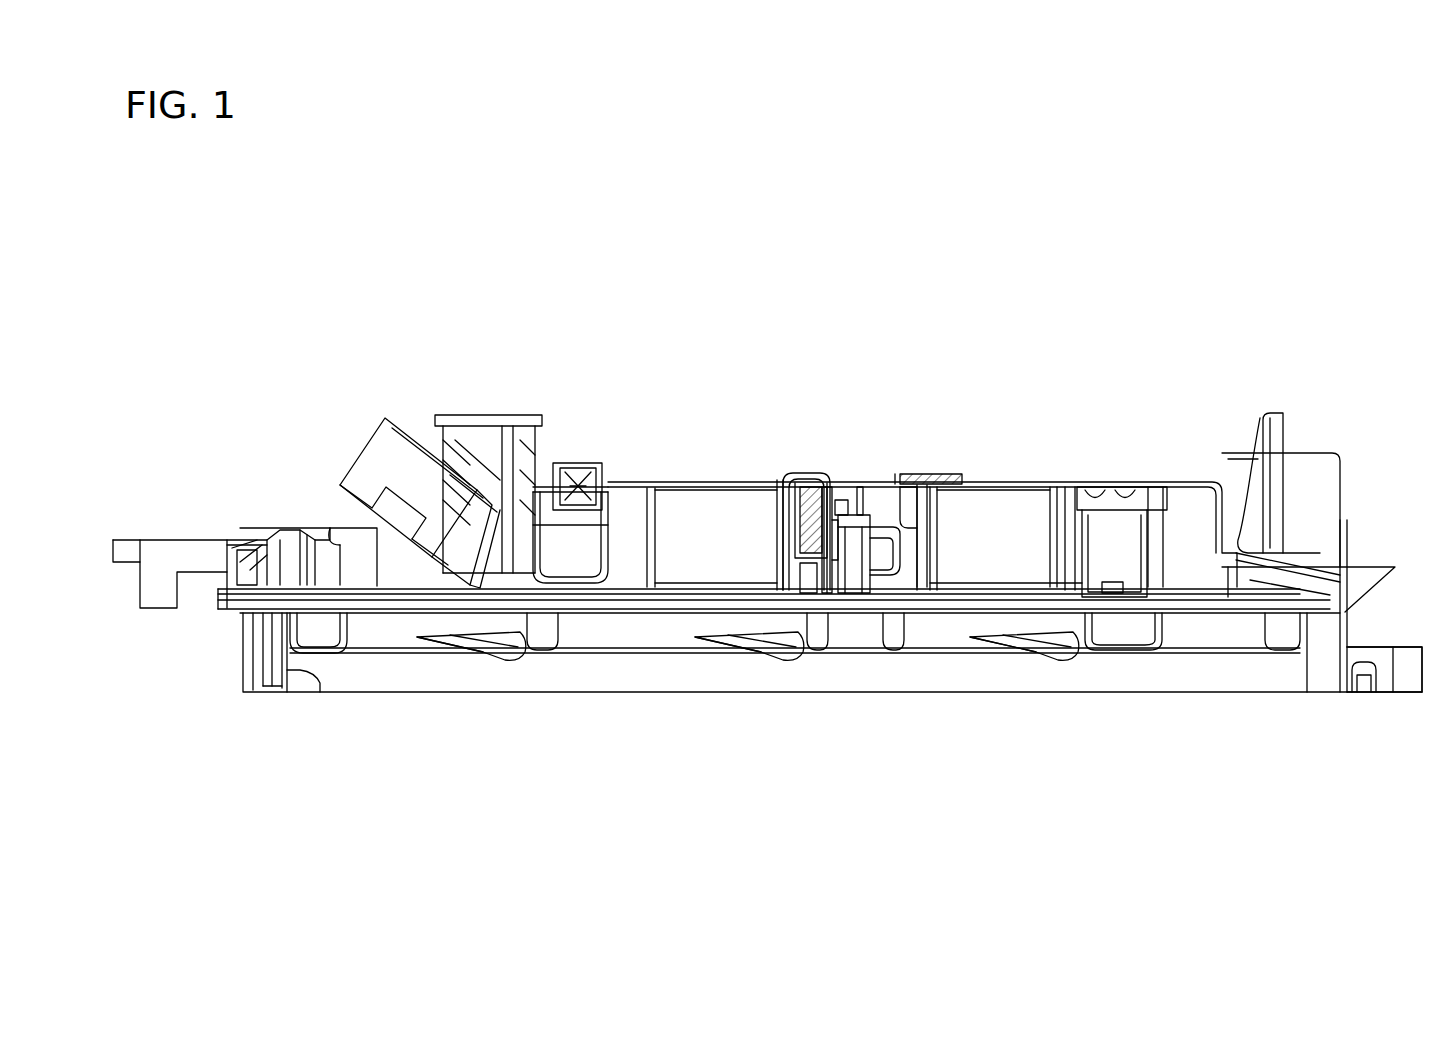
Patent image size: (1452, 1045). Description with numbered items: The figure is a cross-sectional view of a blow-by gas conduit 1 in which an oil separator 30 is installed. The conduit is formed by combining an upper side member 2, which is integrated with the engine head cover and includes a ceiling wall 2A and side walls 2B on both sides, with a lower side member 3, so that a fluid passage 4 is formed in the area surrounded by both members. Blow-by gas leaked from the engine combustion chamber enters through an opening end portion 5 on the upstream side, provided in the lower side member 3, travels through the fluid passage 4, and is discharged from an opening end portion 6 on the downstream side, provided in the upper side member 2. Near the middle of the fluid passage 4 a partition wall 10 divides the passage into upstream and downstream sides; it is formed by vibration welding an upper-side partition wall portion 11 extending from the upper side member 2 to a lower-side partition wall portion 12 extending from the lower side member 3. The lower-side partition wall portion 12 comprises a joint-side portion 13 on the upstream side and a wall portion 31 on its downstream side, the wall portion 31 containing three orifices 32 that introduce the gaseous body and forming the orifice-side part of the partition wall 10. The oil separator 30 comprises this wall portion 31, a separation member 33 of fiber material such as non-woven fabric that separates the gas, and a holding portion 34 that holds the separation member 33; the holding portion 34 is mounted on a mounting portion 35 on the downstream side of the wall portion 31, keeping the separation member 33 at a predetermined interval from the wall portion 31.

The blow-by gas conduit 1 is at (1113, 458).
The upper side member 2 is at (668, 483).
The ceiling wall 2A is at (1015, 480).
The side walls 2B is at (985, 557).
The lower side member 3 is at (743, 593).
The fluid passage 4 is at (683, 533).
The opening end portion 5 is at (1347, 628).
The opening end portion 6 is at (370, 437).
The partition wall 10 is at (870, 560).
The upper-side partition wall portion 11 is at (858, 522).
The lower-side partition wall portion 12 is at (893, 577).
The joint-side portion 13 is at (900, 555).
The oil separator 30 is at (793, 543).
The wall portion 31 is at (840, 498).
The orifices 32 is at (853, 527).
The separation member 33 is at (822, 504).
The holding portion 34 is at (790, 528).
The mounting portion 35 is at (797, 577).